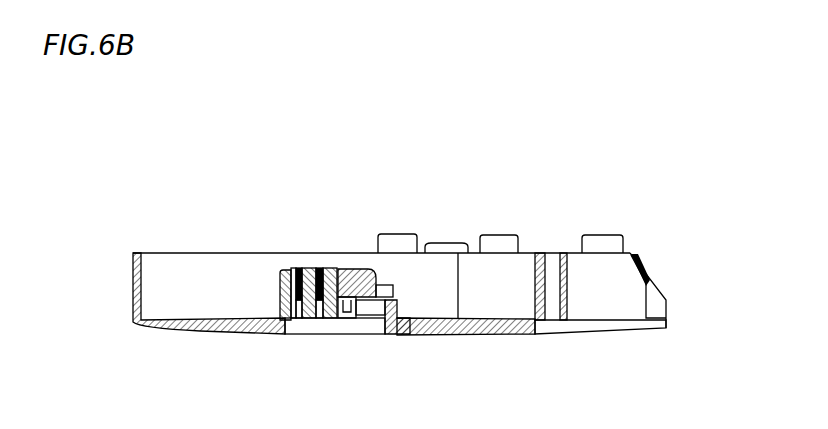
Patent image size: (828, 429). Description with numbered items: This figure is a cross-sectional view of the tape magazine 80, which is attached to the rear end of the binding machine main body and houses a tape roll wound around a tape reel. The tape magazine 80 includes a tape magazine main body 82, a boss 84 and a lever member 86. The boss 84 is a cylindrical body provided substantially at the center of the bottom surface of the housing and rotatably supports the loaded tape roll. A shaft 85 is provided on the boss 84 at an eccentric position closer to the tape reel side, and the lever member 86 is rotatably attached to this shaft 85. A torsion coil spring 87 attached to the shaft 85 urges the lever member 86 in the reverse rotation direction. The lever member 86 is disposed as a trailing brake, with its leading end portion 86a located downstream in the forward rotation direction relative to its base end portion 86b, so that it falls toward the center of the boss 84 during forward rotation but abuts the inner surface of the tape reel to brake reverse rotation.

The tape magazine 80 is at (505, 192).
The tape magazine main body 82 is at (133, 283).
The boss 84 is at (280, 283).
The shaft 85 is at (310, 268).
The lever member 86 is at (352, 268).
The leading end portion 86a is at (372, 270).
The base end portion 86b is at (300, 268).
The torsion coil spring 87 is at (302, 318).